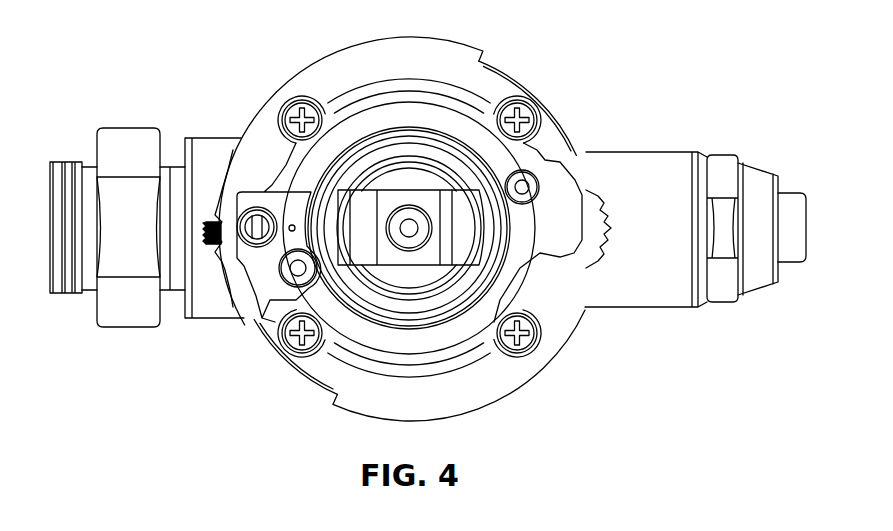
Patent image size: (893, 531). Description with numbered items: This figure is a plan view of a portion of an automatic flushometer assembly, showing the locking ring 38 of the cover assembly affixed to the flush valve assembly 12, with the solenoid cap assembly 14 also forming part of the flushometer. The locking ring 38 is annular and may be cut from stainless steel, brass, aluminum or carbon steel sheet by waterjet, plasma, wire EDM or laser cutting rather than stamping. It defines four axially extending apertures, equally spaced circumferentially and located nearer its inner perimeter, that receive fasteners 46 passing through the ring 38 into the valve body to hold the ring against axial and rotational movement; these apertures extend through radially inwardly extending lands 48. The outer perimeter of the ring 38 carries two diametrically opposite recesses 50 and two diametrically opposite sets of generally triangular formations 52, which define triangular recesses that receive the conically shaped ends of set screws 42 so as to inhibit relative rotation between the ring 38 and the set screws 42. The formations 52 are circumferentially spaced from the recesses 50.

The flush valve assembly 12 is at (428, 243).
The solenoid cap assembly 14 is at (362, 200).
The locking ring 38 is at (507, 368).
The set screws 42 is at (205, 240).
The fasteners 46 is at (535, 340).
The lands 48 is at (527, 313).
The recesses 50 is at (538, 78).
The formations 52 is at (606, 214).